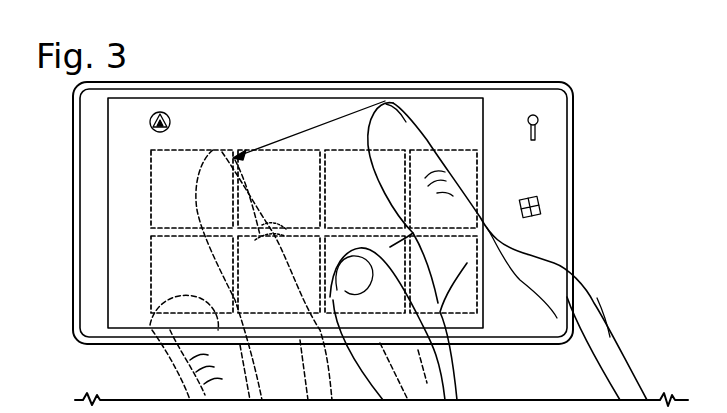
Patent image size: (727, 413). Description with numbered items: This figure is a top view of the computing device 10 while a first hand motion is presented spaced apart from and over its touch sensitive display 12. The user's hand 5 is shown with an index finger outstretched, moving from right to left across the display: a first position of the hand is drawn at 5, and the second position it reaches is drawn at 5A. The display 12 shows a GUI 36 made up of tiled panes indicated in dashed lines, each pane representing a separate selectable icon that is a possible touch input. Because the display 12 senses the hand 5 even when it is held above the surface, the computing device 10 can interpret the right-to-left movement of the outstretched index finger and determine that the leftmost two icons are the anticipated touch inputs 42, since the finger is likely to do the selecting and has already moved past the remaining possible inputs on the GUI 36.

The computing device 10 is at (505, 82).
The touch sensitive display 12 is at (192, 114).
The GUI 36 is at (139, 125).
The anticipated touch inputs 42 is at (203, 202).
The hand 5 is at (632, 367).
The second position of the hand 5A is at (160, 378).